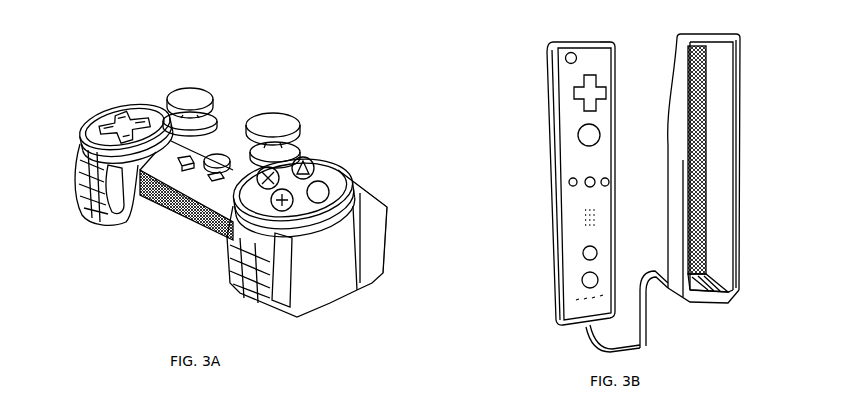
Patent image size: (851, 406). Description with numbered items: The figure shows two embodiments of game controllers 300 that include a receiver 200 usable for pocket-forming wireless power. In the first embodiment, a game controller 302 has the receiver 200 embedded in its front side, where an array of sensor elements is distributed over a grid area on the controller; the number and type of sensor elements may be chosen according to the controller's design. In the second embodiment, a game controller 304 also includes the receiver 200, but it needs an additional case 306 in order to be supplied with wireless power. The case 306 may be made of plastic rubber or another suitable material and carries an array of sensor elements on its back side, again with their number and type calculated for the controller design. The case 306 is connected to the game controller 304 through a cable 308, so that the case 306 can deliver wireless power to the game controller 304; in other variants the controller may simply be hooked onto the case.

In FIG. 3A, the game controllers 300 is at (106, 72).
In FIG. 3A, the receiver 200 is at (180, 207).
In FIG. 3B, the receiver 200 is at (684, 56).
In FIG. 3A, the game controller 302 is at (375, 190).
In FIG. 3B, the game controller 304 is at (549, 130).
In FIG. 3B, the case 306 is at (738, 38).
In FIG. 3B, the cable 308 is at (650, 348).